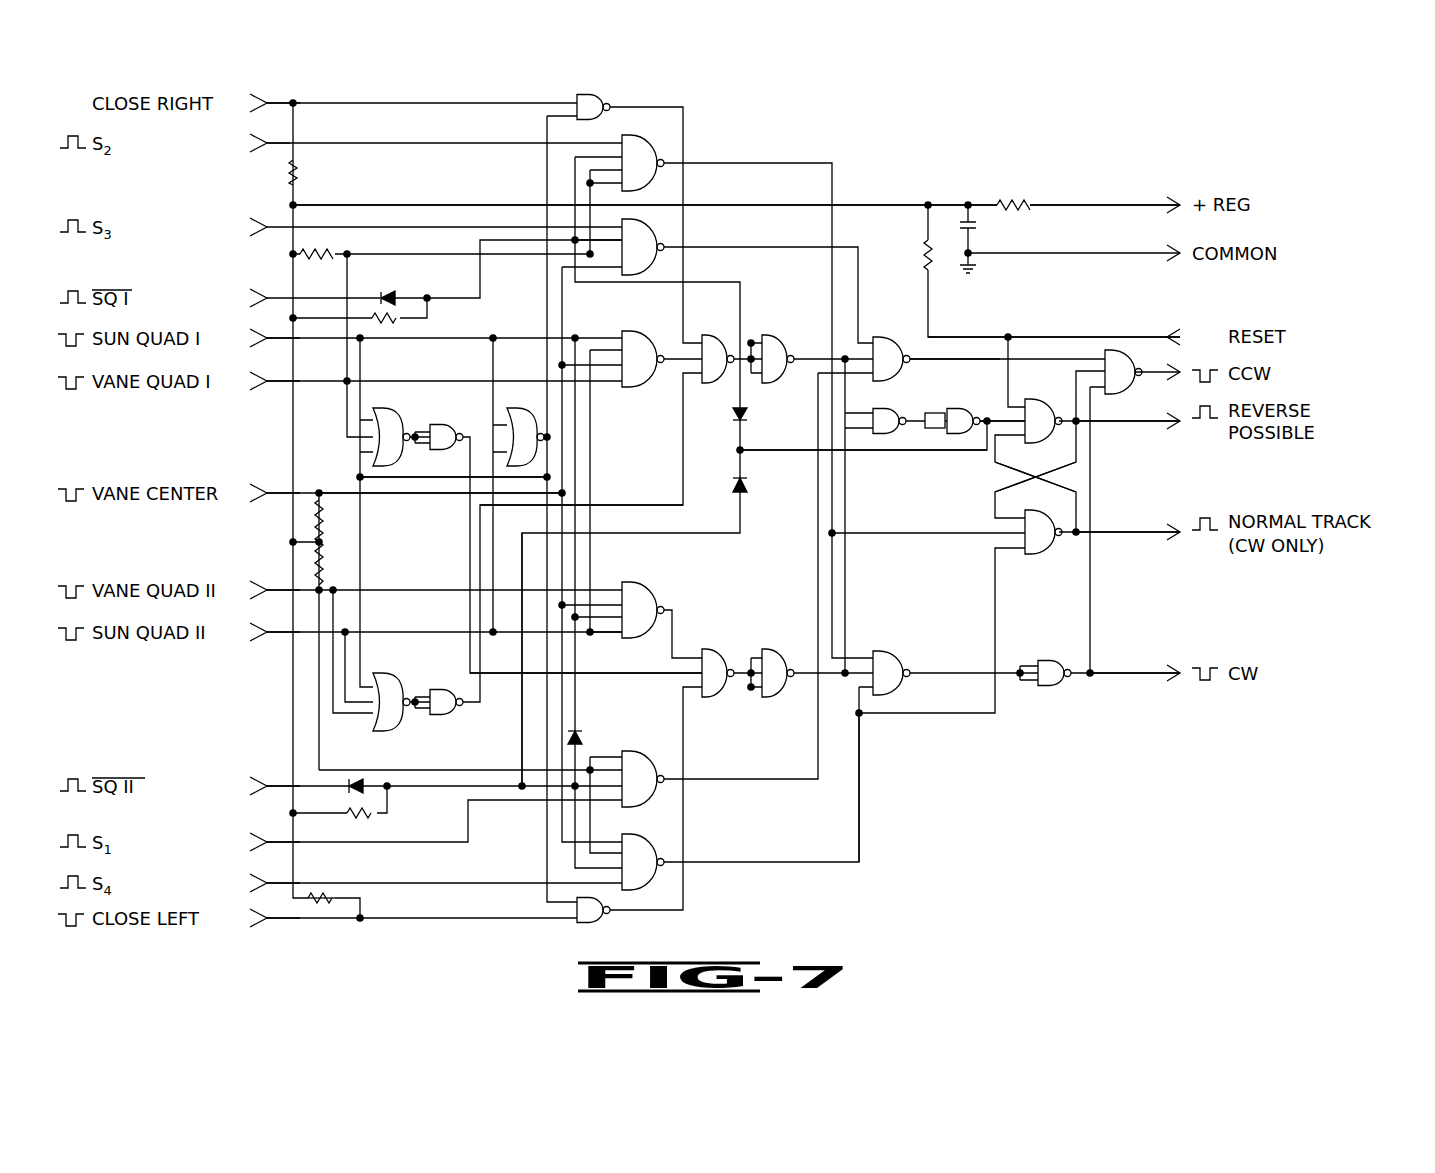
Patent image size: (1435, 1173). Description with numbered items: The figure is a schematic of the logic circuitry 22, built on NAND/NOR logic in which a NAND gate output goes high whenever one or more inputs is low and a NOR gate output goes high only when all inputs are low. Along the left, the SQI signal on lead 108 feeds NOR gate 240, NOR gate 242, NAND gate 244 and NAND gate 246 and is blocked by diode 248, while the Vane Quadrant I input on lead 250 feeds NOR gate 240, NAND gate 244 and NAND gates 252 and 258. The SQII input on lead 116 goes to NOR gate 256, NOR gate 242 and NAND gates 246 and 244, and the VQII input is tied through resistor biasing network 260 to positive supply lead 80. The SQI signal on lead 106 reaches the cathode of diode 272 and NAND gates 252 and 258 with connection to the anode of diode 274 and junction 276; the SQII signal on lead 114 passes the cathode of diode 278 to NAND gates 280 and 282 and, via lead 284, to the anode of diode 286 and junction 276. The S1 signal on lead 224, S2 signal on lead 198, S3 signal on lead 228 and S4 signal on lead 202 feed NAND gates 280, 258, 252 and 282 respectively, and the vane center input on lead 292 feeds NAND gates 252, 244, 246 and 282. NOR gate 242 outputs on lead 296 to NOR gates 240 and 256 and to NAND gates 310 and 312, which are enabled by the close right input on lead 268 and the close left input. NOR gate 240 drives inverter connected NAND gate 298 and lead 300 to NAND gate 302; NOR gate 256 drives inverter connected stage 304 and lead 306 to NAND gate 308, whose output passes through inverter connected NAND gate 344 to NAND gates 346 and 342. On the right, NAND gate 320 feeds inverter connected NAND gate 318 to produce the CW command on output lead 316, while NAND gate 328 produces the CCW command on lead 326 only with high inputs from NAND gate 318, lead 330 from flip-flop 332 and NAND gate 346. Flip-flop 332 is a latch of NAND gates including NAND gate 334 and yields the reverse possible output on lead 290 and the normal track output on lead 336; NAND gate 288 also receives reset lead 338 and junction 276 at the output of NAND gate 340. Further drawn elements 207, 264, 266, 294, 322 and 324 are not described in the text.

The logic circuitry 22 is at (920, 153).
The positive supply lead 80 is at (435, 205).
The lead 106 is at (275, 305).
The lead 108 is at (275, 345).
The lead 114 is at (275, 785).
The lead 116 is at (275, 640).
The lead 198 is at (275, 150).
The lead 202 is at (285, 882).
The close left input 207 is at (290, 925).
The lead 224 is at (285, 842).
The lead 228 is at (275, 235).
The NOR gate 240 is at (385, 416).
The NOR gate 242 is at (503, 410).
The NAND gate 244 is at (635, 330).
The NAND gate 246 is at (637, 588).
The diode 248 is at (580, 731).
The lead 250 is at (275, 388).
The NAND gate 252 is at (662, 232).
The NOR gate 256 is at (375, 672).
The NAND gate 258 is at (635, 138).
The resistor biasing network 260 is at (338, 542).
The resistor 264 is at (299, 176).
The resistor 266 is at (310, 905).
The lead 268 is at (293, 103).
The diode 272 is at (393, 290).
The diode 274 is at (750, 414).
The junction 276 is at (738, 449).
The diode 278 is at (367, 774).
The NAND gate 280 is at (632, 750).
The NAND gate 282 is at (635, 838).
The lead 284 is at (522, 740).
The diode 286 is at (747, 480).
The NAND gate 288 is at (1027, 398).
The lead 290 is at (1135, 425).
The lead 292 is at (275, 500).
The line 294 is at (393, 496).
The lead 296 is at (403, 478).
The inverter connected NAND gate 298 is at (437, 424).
The lead 300 is at (600, 676).
The NAND gate 302 is at (711, 648).
The inverter connected stage 304 is at (432, 690).
The lead 306 is at (615, 504).
The NAND gate 308 is at (700, 338).
The NAND gate 310 is at (598, 99).
The NAND gate 312 is at (590, 925).
The output lead 316 is at (1122, 672).
The inverter connected NAND gate 318 is at (1042, 660).
The NAND gate 320 is at (893, 660).
The line 322 is at (859, 797).
The NAND gate 324 is at (770, 650).
The lead 326 is at (1145, 378).
The NAND gate 328 is at (1127, 366).
The lead 330 is at (1072, 388).
The flip-flop 332 is at (1014, 480).
The NAND gate 334 is at (938, 361).
The lead 336 is at (1128, 538).
The reset lead 338 is at (1015, 337).
The NAND gate 340 is at (949, 410).
The NAND gate 342 is at (884, 410).
The inverter connected NAND gate 344 is at (765, 338).
The NAND gate 346 is at (912, 322).